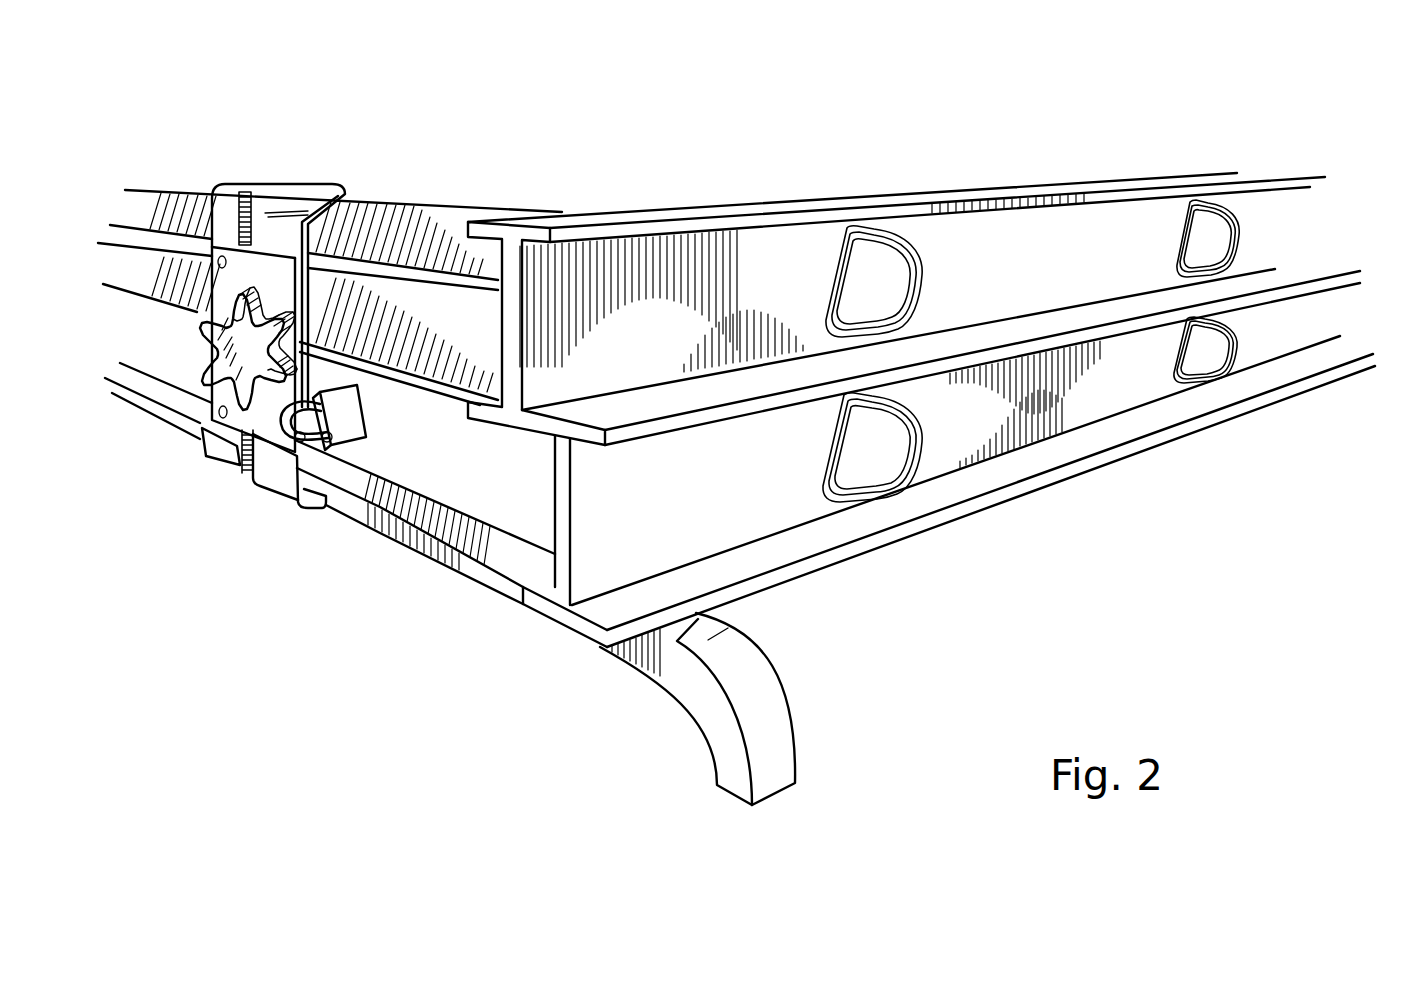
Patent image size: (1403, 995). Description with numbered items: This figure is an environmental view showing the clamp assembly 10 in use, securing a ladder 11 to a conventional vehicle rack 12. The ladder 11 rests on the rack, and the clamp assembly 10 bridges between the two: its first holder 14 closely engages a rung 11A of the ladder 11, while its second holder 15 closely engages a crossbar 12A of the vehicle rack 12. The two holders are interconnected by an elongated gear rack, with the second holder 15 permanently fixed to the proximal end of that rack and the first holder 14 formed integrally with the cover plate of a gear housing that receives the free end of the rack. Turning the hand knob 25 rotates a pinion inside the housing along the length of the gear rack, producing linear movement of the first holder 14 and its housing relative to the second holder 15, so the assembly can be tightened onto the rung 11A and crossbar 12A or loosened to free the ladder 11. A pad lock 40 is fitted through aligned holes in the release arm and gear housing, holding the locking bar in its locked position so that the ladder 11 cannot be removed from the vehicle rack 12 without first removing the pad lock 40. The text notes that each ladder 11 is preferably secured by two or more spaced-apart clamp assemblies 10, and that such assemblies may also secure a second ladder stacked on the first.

The clamp assembly 10 is at (193, 158).
The ladder 11 is at (1087, 193).
The rung 11A is at (405, 207).
The vehicle rack 12 is at (768, 725).
The crossbar 12A is at (353, 500).
The first holder 14 is at (275, 190).
The second holder 15 is at (272, 472).
The hand knob 25 is at (202, 367).
The pad lock 40 is at (353, 415).